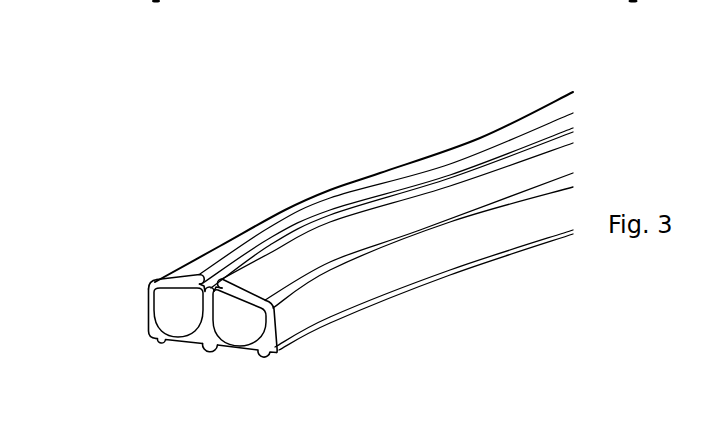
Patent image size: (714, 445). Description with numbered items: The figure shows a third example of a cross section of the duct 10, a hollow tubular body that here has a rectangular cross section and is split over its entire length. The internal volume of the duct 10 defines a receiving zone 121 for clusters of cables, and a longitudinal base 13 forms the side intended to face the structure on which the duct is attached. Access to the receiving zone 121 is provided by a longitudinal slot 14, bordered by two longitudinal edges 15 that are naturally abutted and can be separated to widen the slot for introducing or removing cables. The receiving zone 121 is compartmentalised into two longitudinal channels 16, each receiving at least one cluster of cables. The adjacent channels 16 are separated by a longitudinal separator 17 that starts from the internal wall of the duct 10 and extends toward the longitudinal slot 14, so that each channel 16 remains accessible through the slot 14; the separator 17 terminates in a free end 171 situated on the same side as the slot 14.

The duct 10 is at (332, 252).
The longitudinal base 13 is at (220, 353).
The longitudinal slot 14 is at (238, 265).
The longitudinal edges 15 is at (217, 267).
The longitudinal channels 16 is at (155, 317).
The longitudinal separator 17 is at (203, 318).
The receiving zone 121 is at (155, 332).
The free end 171 is at (157, 282).